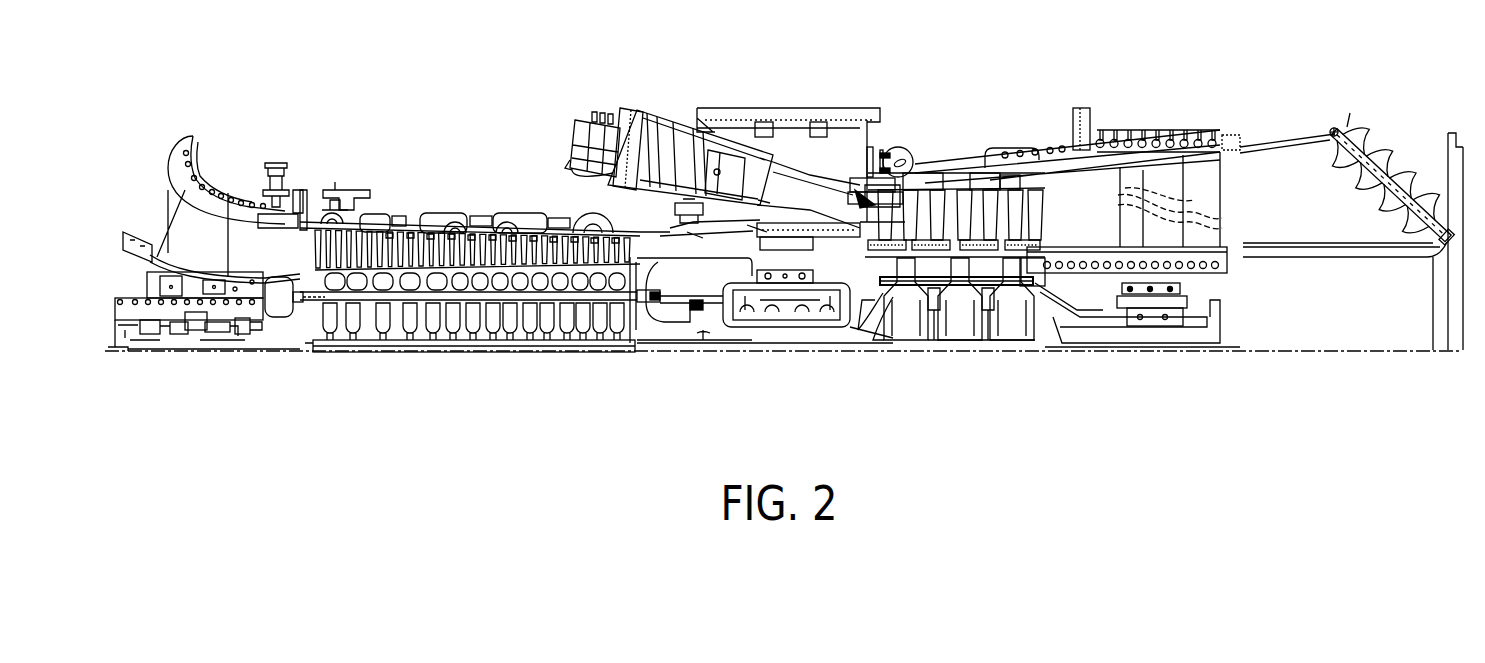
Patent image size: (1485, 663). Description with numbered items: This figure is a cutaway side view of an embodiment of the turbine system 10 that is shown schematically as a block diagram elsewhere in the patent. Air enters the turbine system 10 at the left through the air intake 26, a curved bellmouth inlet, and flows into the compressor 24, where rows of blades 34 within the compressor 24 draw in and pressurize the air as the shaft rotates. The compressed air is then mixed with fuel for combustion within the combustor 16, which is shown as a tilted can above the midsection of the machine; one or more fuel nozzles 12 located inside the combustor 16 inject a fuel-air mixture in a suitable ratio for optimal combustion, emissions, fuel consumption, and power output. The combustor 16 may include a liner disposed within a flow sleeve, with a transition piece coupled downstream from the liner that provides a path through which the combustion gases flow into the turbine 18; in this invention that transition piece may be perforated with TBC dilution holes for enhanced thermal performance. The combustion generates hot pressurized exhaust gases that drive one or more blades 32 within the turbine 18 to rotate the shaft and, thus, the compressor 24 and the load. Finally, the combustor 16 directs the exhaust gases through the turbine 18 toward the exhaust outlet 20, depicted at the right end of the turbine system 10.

The turbine system 10 is at (786, 240).
The fuel nozzles 12 is at (594, 114).
The combustor 16 is at (722, 137).
The turbine 18 is at (1049, 194).
The exhaust outlet 20 is at (1383, 150).
The compressor 24 is at (597, 210).
The air intake 26 is at (183, 240).
The turbine blades 32 is at (956, 171).
The compressor blades 34 is at (357, 230).